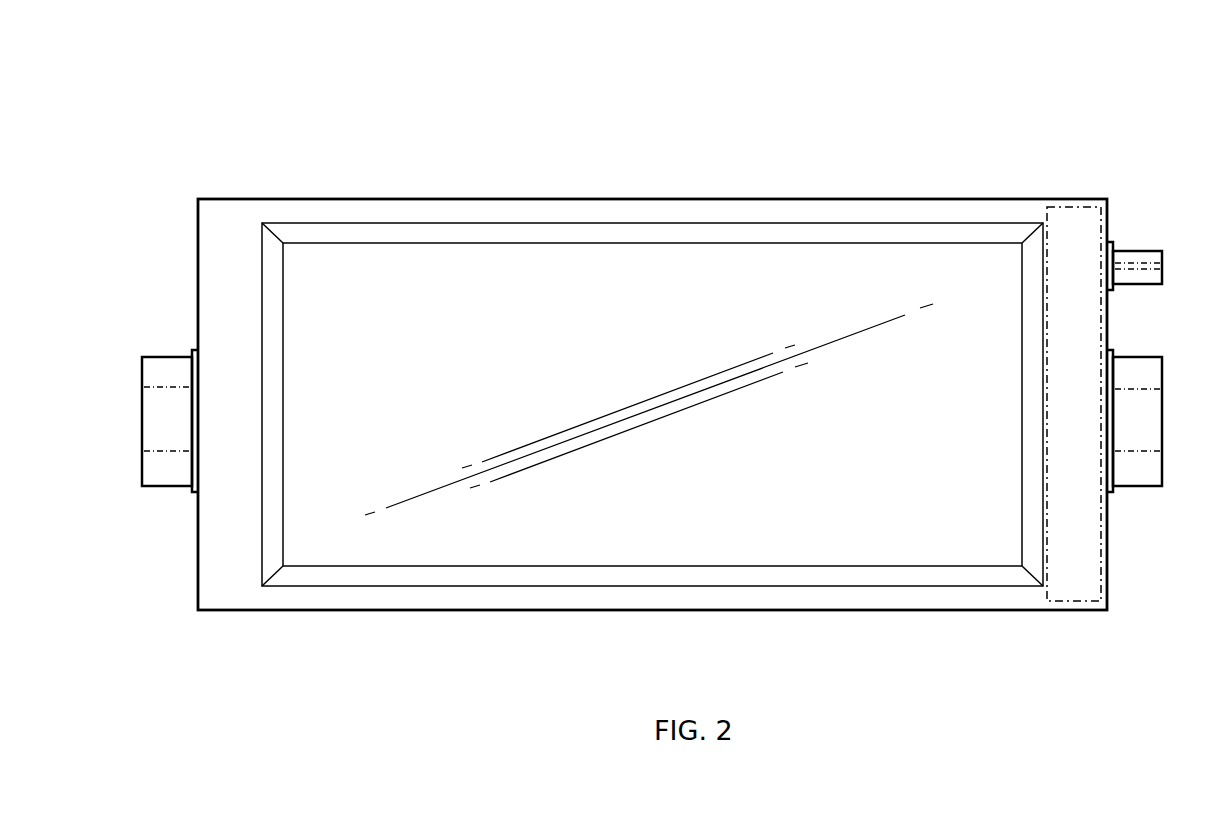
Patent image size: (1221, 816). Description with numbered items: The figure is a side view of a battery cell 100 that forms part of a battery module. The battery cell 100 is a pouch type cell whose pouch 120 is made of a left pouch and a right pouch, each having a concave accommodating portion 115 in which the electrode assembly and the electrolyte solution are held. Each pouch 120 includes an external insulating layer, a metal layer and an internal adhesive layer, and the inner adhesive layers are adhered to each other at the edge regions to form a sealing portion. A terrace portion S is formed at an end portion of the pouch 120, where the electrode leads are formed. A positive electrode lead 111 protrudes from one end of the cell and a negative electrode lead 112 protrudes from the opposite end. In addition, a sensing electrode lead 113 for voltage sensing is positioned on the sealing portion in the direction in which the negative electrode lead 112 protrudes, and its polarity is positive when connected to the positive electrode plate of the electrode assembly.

The battery cell 100 is at (270, 122).
The pouch 120 is at (233, 199).
The accommodating portion 115 is at (487, 290).
The terrace portion S is at (1073, 208).
The positive electrode lead 111 is at (142, 419).
The negative electrode lead 112 is at (1162, 420).
The sensing electrode lead 113 is at (1162, 265).